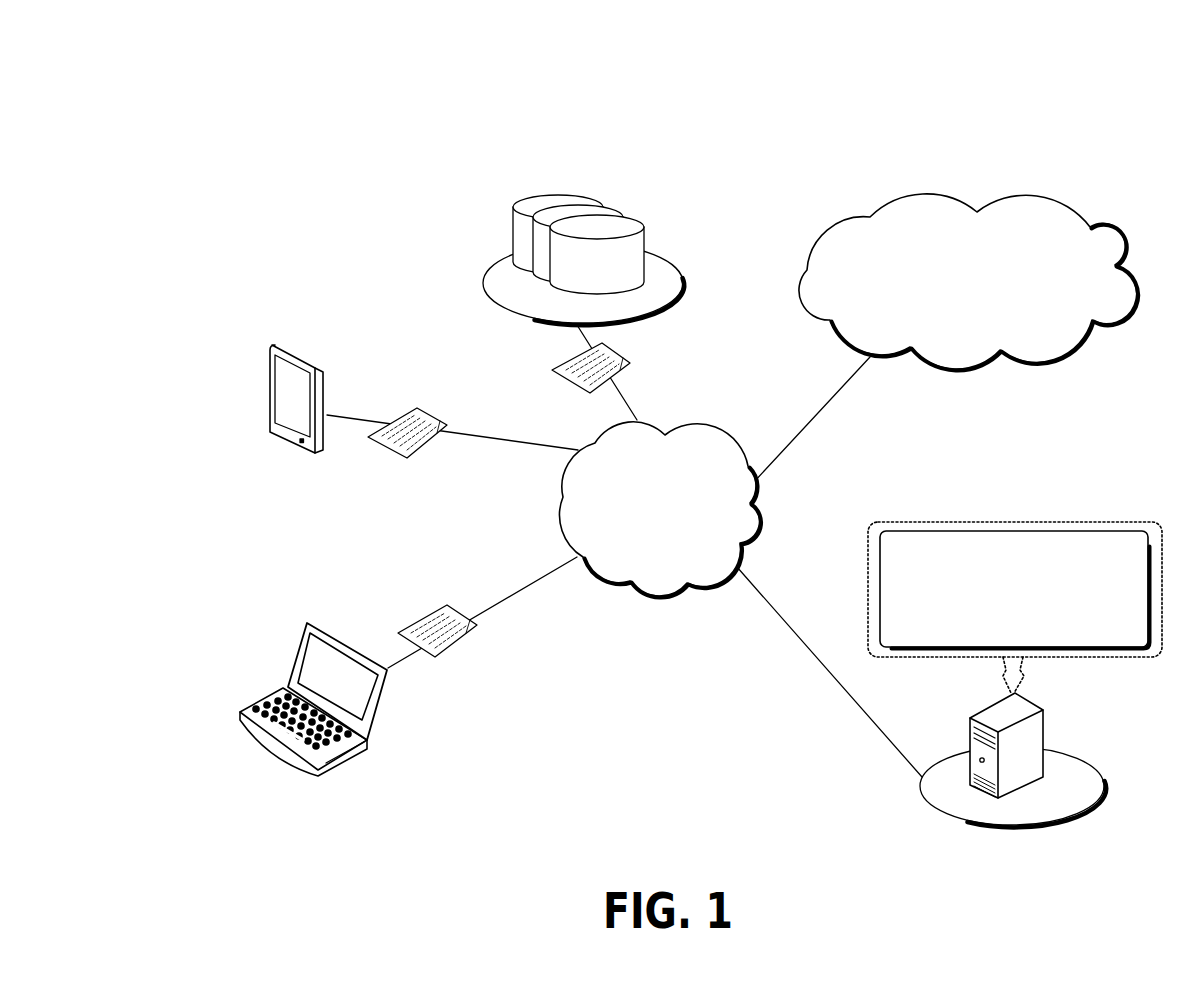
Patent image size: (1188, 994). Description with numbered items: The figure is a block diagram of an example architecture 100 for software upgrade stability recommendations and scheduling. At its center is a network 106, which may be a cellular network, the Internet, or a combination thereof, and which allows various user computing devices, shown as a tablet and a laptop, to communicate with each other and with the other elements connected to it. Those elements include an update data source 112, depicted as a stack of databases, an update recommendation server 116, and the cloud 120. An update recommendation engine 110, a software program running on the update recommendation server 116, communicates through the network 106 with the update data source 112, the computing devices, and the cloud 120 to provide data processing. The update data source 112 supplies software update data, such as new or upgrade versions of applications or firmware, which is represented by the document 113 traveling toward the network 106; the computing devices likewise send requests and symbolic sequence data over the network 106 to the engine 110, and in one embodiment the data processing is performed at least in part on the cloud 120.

The architecture 100 is at (102, 52).
The network 106 is at (560, 492).
The update recommendation engine 110 is at (1030, 645).
The update data source 112 is at (665, 253).
The update data 113 is at (630, 352).
The update recommendation server 116 is at (1087, 767).
The cloud 120 is at (1085, 350).